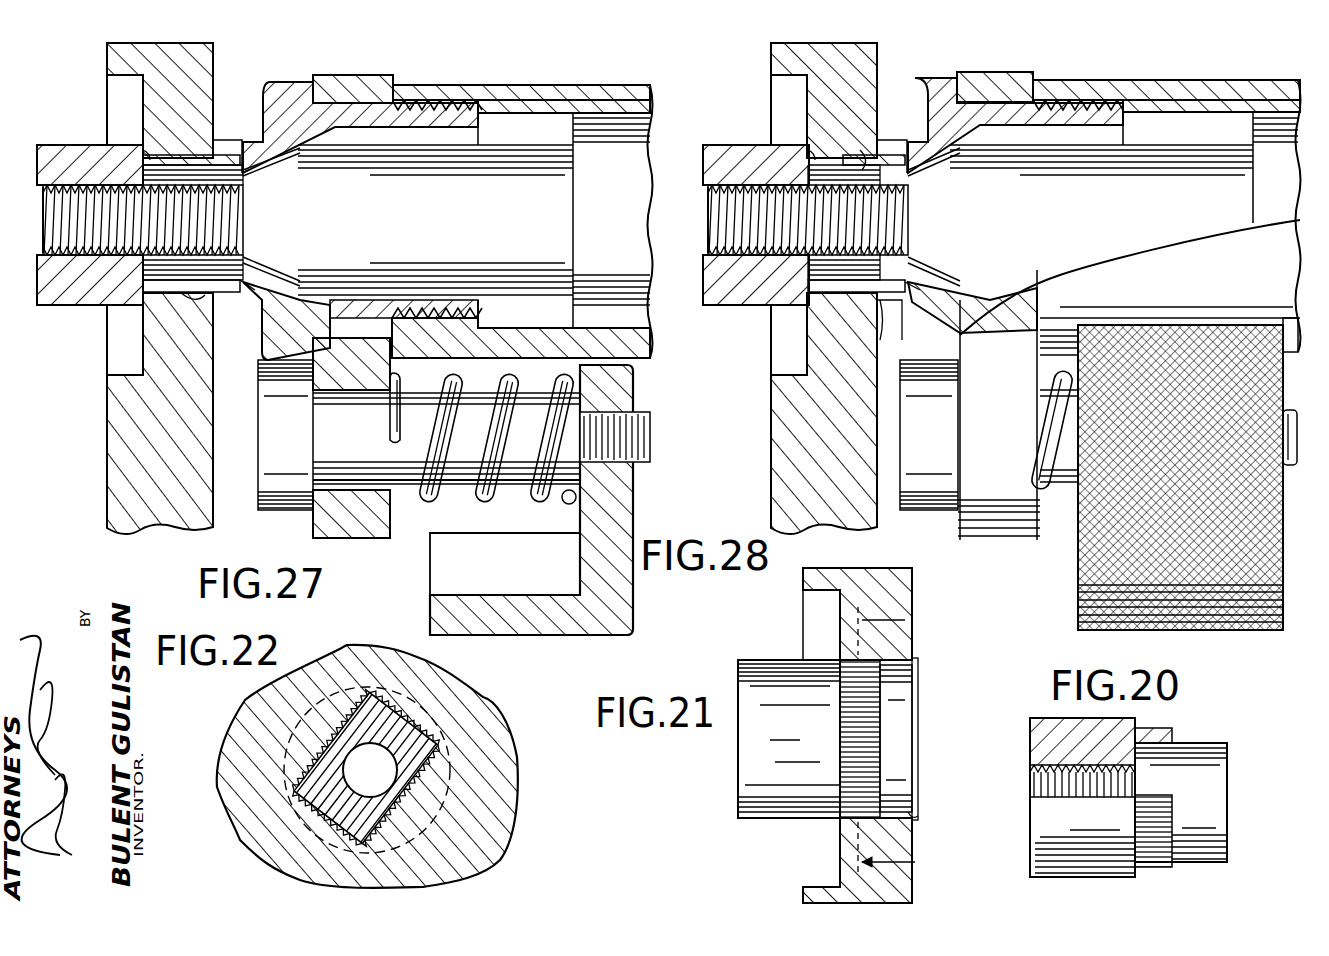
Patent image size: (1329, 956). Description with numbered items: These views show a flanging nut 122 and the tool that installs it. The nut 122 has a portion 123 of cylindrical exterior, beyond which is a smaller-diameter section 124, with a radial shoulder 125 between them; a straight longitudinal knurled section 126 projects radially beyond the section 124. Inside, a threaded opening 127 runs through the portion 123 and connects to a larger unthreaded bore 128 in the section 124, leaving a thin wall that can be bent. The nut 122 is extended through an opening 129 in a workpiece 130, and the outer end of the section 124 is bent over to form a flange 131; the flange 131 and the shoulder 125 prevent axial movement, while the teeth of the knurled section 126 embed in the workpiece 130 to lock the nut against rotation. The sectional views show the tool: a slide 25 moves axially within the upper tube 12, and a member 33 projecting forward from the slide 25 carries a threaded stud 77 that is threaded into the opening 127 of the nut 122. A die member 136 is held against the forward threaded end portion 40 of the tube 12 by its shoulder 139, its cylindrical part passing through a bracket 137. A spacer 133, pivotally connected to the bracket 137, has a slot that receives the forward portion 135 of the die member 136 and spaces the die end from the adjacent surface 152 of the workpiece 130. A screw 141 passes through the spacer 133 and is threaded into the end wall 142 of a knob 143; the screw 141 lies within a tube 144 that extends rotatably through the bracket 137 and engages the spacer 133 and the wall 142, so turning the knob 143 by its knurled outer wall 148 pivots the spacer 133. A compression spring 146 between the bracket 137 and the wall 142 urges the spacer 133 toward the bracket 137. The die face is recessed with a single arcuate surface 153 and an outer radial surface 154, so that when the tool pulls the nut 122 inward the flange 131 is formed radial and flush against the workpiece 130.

In FIG. 27, the upper tube 12 is at (600, 85).
In FIG. 28, the upper tube 12 is at (1292, 80).
In FIG. 27, the slide 25 is at (635, 130).
In FIG. 28, the slide 25 is at (1280, 132).
In FIG. 27, the member 33 is at (512, 146).
In FIG. 28, the member 33 is at (1200, 146).
In FIG. 27, the forward threaded end portion 40 is at (470, 85).
In FIG. 28, the forward threaded end portion 40 is at (1145, 80).
In FIG. 27, the threaded stud 77 is at (55, 212).
In FIG. 28, the threaded stud 77 is at (720, 212).
In FIG. 27, the nut 122 is at (37, 143).
In FIG. 28, the nut 122 is at (727, 307).
In FIG. 21, the nut 122 is at (738, 806).
In FIG. 20, the nut 122 is at (1200, 726).
In FIG. 27, the portion of cylindrical exterior 123 is at (70, 145).
In FIG. 28, the portion of cylindrical exterior 123 is at (722, 145).
In FIG. 22, the portion of cylindrical exterior 123 is at (300, 737).
In FIG. 21, the portion of cylindrical exterior 123 is at (770, 820).
In FIG. 20, the portion of cylindrical exterior 123 is at (1075, 878).
In FIG. 27, the section of smaller diameter 124 is at (225, 155).
In FIG. 28, the section of smaller diameter 124 is at (850, 292).
In FIG. 21, the section of smaller diameter 124 is at (900, 752).
In FIG. 20, the section of smaller diameter 124 is at (1207, 865).
In FIG. 27, the radial shoulder 125 is at (150, 150).
In FIG. 28, the radial shoulder 125 is at (825, 292).
In FIG. 20, the radial shoulder 125 is at (1140, 870).
In FIG. 27, the knurled section 126 is at (145, 297).
In FIG. 28, the knurled section 126 is at (815, 150).
In FIG. 22, the knurled section 126 is at (445, 757).
In FIG. 21, the knurled section 126 is at (865, 722).
In FIG. 20, the knurled section 126 is at (1155, 865).
In FIG. 27, the threaded opening 127 is at (65, 245).
In FIG. 28, the threaded opening 127 is at (712, 250).
In FIG. 22, the threaded opening 127 is at (345, 776).
In FIG. 20, the threaded opening 127 is at (1042, 783).
In FIG. 27, the unthreaded bore 128 is at (145, 290).
In FIG. 28, the unthreaded bore 128 is at (880, 265).
In FIG. 20, the unthreaded bore 128 is at (1215, 783).
In FIG. 27, the opening 129 is at (205, 300).
In FIG. 28, the opening 129 is at (870, 160).
In FIG. 21, the opening 129 is at (918, 814).
In FIG. 27, the workpiece 130 is at (107, 50).
In FIG. 28, the workpiece 130 is at (772, 419).
In FIG. 22, the workpiece 130 is at (495, 834).
In FIG. 21, the workpiece 130 is at (905, 584).
In FIG. 28, the flange 131 is at (890, 292).
In FIG. 21, the flange 131 is at (918, 668).
In FIG. 27, the spacer 133 is at (280, 510).
In FIG. 28, the spacer 133 is at (925, 510).
In FIG. 27, the forward portion 135 is at (262, 268).
In FIG. 27, the die member 136 is at (282, 75).
In FIG. 28, the die member 136 is at (935, 75).
In FIG. 27, the bracket 137 is at (395, 72).
In FIG. 28, the bracket 137 is at (1030, 537).
In FIG. 27, the shoulder 139 is at (334, 80).
In FIG. 28, the shoulder 139 is at (988, 72).
In FIG. 27, the screw 141 is at (633, 444).
In FIG. 28, the screw 141 is at (1297, 446).
In FIG. 27, the end wall 142 is at (633, 503).
In FIG. 27, the knob 143 is at (636, 613).
In FIG. 28, the knob 143 is at (1286, 563).
In FIG. 27, the tube 144 is at (405, 478).
In FIG. 28, the tube 144 is at (1037, 442).
In FIG. 27, the compression spring 146 is at (510, 500).
In FIG. 28, the compression spring 146 is at (1062, 512).
In FIG. 27, the knurled outer wall 148 is at (583, 633).
In FIG. 28, the knurled outer wall 148 is at (1245, 633).
In FIG. 27, the surface 152 is at (215, 58).
In FIG. 28, the surface 152 is at (879, 58).
In FIG. 27, the arcuate surface 153 is at (245, 285).
In FIG. 28, the arcuate surface 153 is at (915, 274).
In FIG. 27, the radial surface 154 is at (240, 160).
In FIG. 28, the radial surface 154 is at (900, 168).